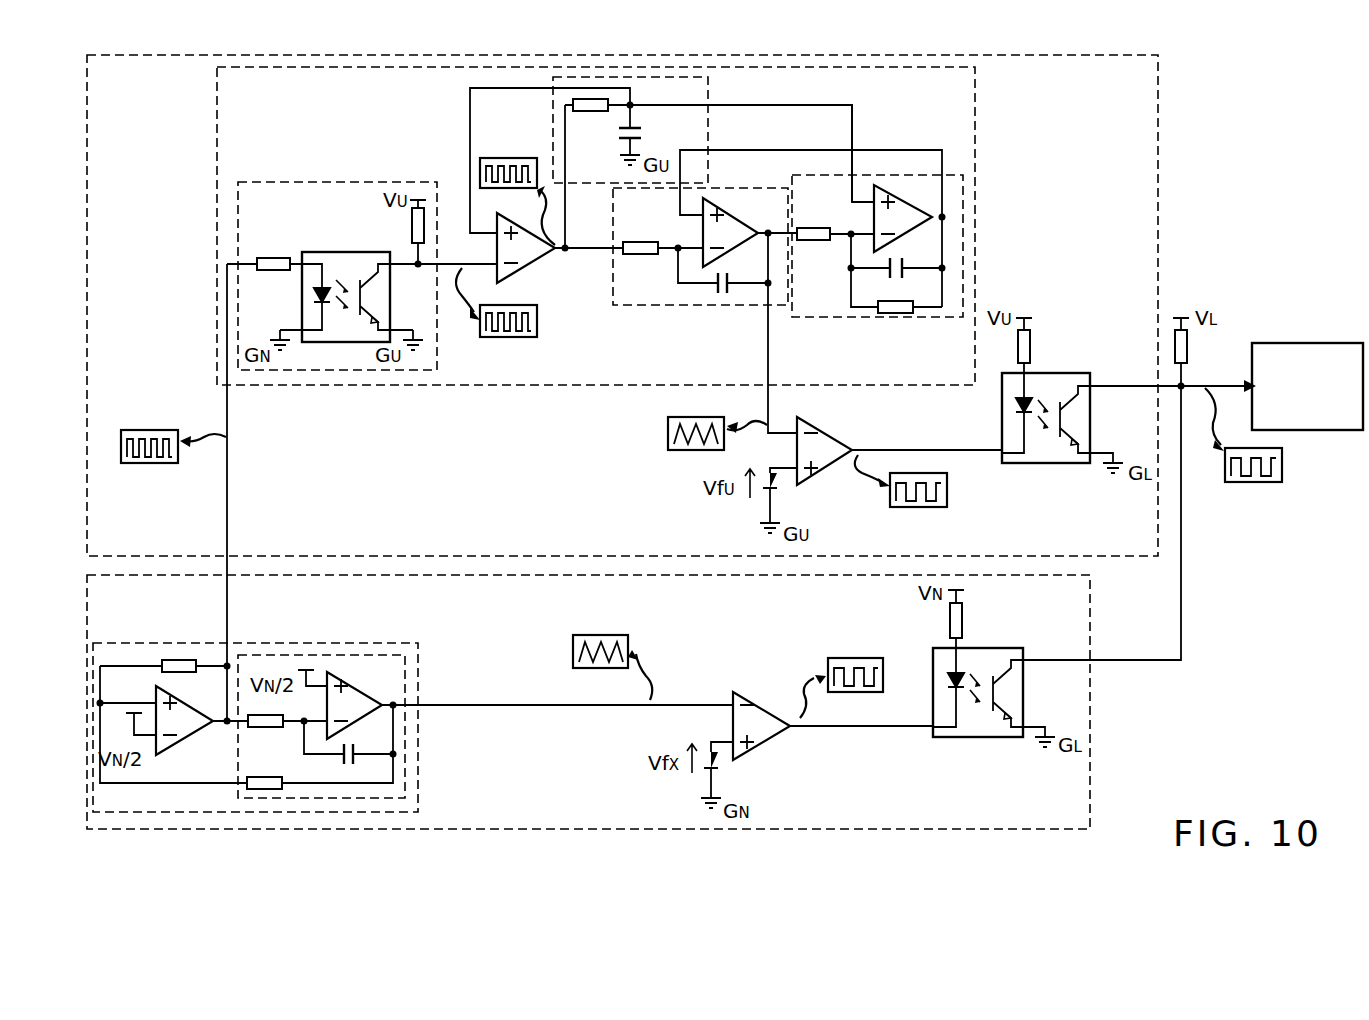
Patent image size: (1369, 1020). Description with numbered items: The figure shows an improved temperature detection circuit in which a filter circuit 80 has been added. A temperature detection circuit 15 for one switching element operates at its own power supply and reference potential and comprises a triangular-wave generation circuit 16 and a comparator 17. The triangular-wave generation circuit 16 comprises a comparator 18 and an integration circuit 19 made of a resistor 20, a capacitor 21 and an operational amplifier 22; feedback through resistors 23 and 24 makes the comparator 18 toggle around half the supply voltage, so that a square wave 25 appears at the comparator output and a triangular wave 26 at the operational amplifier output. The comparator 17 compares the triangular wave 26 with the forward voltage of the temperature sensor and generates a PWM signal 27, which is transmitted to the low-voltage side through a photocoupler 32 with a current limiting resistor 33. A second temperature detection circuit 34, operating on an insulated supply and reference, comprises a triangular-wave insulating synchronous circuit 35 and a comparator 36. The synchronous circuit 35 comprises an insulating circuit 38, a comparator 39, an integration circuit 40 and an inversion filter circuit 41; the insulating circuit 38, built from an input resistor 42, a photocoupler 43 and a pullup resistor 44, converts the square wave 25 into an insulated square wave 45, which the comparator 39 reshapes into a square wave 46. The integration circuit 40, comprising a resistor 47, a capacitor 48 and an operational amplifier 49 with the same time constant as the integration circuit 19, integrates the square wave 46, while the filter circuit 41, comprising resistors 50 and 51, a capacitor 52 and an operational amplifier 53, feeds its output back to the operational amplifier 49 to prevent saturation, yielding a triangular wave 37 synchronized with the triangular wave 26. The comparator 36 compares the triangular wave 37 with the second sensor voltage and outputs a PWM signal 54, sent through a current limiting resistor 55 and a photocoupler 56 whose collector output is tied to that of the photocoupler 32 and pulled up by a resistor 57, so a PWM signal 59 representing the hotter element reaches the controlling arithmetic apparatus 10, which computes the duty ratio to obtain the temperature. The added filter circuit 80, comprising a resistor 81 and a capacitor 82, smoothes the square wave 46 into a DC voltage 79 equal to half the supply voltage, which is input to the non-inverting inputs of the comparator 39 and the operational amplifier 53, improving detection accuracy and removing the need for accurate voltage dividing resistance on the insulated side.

The controlling arithmetic apparatus 10 is at (1338, 432).
The temperature detection circuit 15 is at (1092, 758).
The triangular-wave generation circuit 16 is at (420, 789).
The comparator 17 is at (769, 698).
The comparator 18 is at (185, 742).
The integration circuit 19 is at (407, 749).
The resistor 20 is at (266, 728).
The capacitor 21 is at (343, 762).
The operational amplifier 22 is at (374, 686).
The resistor 23 is at (248, 777).
The resistor 24 is at (178, 658).
The square wave 25 is at (143, 426).
The triangular wave 26 is at (571, 650).
The PWM signal 27 is at (858, 656).
The photocoupler 32 is at (1003, 740).
The current limiting resistor 33 is at (964, 620).
The temperature detection circuit 34 is at (1160, 196).
The triangular-wave insulating synchronous circuit 35 is at (977, 152).
The comparator 36 is at (836, 428).
The triangular wave 37 is at (666, 432).
The insulating circuit 38 is at (438, 357).
The comparator 39 is at (556, 268).
The integration circuit 40 is at (634, 307).
The inversion filter circuit 41 is at (820, 319).
The input resistor 42 is at (274, 256).
The photocoupler 43 is at (325, 250).
The pullup resistor 44 is at (410, 226).
The square wave 45 is at (539, 320).
The square wave 46 is at (500, 158).
The resistor 47 is at (640, 256).
The capacitor 48 is at (728, 295).
The operational amplifier 49 is at (730, 208).
The resistor 50 is at (812, 242).
The resistor 51 is at (893, 314).
The capacitor 52 is at (900, 280).
The operational amplifier 53 is at (885, 195).
The PWM signal 54 is at (949, 490).
The current limiting resistor 55 is at (1032, 348).
The photocoupler 56 is at (1072, 465).
The resistor 57 is at (1189, 350).
The PWM signal 59 is at (1245, 484).
The DC voltage 79 is at (854, 133).
The filter circuit 80 is at (710, 128).
The resistor 81 is at (588, 113).
The capacitor 82 is at (644, 135).